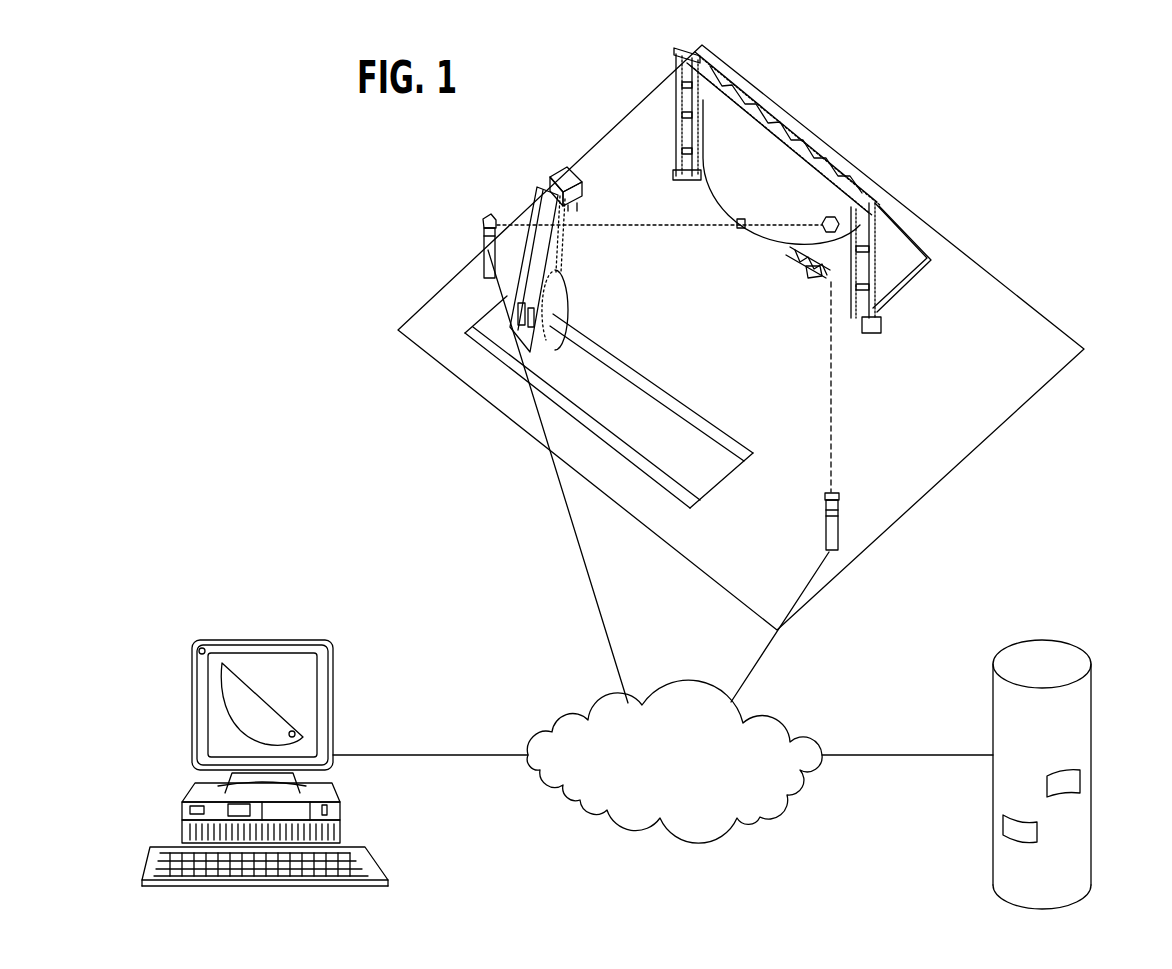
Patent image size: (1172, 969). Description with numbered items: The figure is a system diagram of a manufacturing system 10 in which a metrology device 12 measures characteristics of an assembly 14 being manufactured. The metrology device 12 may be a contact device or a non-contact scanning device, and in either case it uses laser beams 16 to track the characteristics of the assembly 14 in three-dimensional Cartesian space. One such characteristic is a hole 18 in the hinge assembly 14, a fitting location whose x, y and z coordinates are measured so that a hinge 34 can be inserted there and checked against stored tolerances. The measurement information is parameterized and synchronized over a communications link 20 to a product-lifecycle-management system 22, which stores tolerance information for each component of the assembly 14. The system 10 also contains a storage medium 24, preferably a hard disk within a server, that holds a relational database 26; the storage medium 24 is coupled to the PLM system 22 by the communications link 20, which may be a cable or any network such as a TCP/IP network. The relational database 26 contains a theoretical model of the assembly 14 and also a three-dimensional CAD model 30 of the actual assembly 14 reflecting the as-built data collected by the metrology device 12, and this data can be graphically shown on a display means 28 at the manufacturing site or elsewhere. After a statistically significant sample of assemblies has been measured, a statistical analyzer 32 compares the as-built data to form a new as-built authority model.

The manufacturing system 10 is at (478, 148).
The metrology device 12 is at (487, 260).
The assembly 14 is at (751, 193).
The laser beams 16 is at (668, 228).
The hole 18 is at (830, 184).
The communications link 20 is at (753, 735).
The product-lifecycle-management (PLM) system 22 is at (182, 805).
The storage medium 24 is at (1068, 700).
The relational database 26 is at (1081, 778).
The display means 28 is at (307, 685).
The 3D CAD model 30 is at (1012, 838).
The statistical analyzer 32 is at (190, 821).
The hinge 34 is at (817, 273).